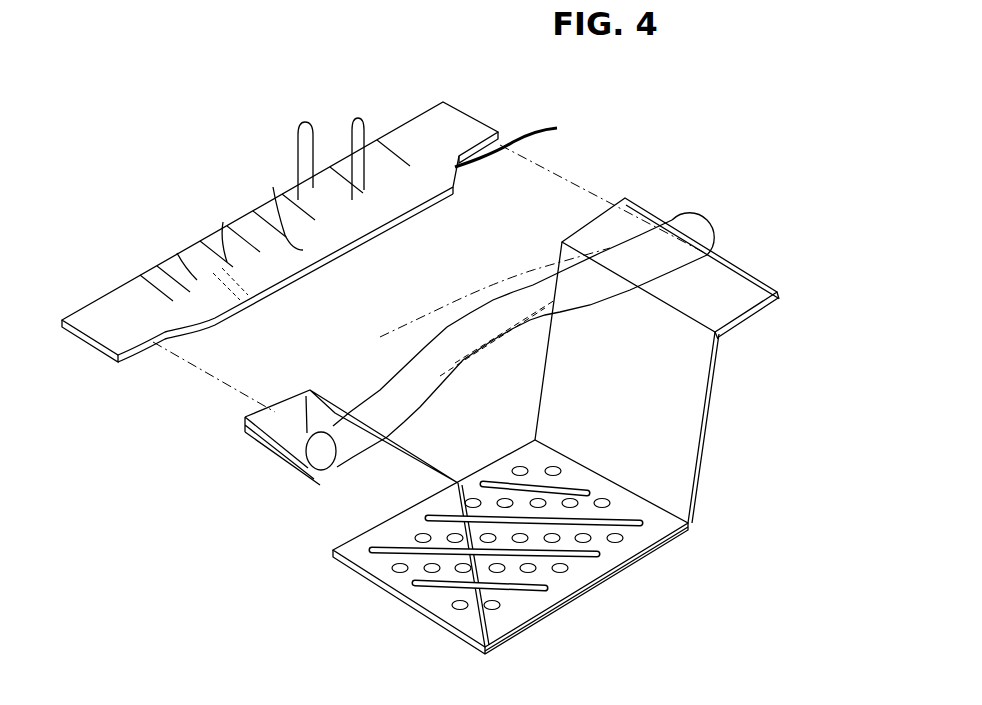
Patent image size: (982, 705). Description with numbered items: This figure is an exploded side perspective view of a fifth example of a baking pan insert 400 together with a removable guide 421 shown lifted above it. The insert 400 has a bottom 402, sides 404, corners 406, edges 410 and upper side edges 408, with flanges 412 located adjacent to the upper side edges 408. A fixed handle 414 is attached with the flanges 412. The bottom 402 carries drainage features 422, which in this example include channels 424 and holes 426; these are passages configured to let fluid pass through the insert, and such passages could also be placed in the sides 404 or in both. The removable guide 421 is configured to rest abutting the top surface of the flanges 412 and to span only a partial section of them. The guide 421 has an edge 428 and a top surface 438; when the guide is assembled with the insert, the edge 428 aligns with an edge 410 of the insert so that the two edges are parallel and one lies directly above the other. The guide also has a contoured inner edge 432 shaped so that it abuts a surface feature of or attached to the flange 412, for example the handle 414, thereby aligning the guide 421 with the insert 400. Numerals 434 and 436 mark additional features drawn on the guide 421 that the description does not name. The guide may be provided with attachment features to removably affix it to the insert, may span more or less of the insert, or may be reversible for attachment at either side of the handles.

The baking pan insert 400 is at (327, 600).
The bottom 402 is at (537, 443).
The sides 404 is at (672, 378).
The corners 406 is at (487, 648).
The upper side edges 408 is at (718, 313).
The edges 410 is at (653, 552).
The flanges 412 is at (712, 273).
The fixed handle 414 is at (693, 228).
The removable guide 421 is at (145, 148).
The drainage features 422 is at (489, 458).
The channels 424 is at (503, 588).
The holes 426 is at (563, 470).
The edge 428 is at (413, 113).
The inner edge 432 is at (527, 145).
The tabs 434 is at (357, 138).
The tabs 436 is at (223, 222).
The top surface 438 is at (273, 187).